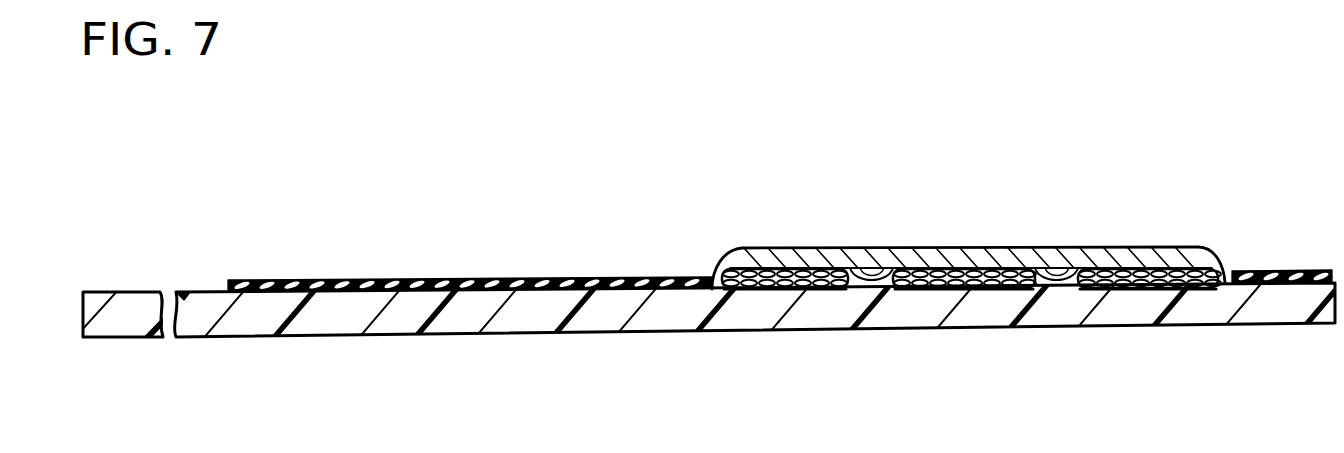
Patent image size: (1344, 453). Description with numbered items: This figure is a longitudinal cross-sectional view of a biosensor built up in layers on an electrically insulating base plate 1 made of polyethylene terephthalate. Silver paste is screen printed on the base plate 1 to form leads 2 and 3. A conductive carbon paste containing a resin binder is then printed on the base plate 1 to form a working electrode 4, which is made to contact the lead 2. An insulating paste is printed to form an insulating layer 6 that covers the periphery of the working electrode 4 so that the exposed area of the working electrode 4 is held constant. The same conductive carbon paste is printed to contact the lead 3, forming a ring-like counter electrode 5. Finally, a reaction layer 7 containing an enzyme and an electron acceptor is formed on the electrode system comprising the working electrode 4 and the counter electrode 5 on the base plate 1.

The base plate 1 is at (243, 320).
The lead 2 is at (983, 296).
The lead 3 is at (815, 300).
The working electrode 4 is at (955, 250).
The counter electrode 5 is at (788, 252).
The insulating layer 6 is at (616, 278).
The reaction layer 7 is at (990, 250).